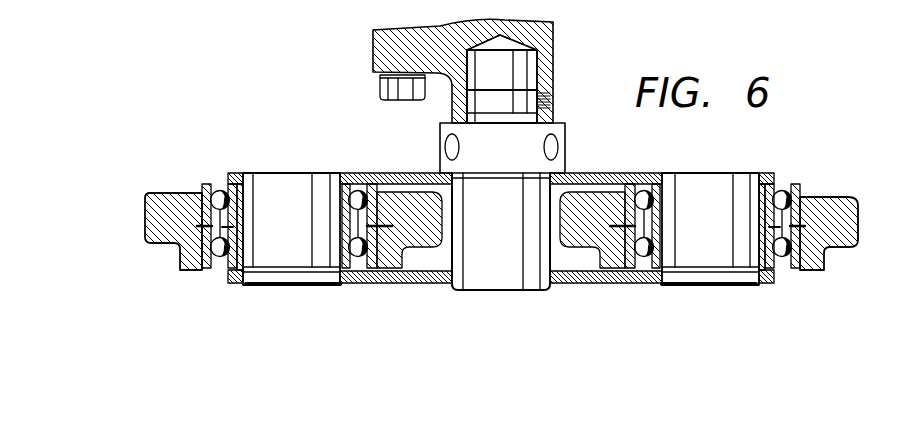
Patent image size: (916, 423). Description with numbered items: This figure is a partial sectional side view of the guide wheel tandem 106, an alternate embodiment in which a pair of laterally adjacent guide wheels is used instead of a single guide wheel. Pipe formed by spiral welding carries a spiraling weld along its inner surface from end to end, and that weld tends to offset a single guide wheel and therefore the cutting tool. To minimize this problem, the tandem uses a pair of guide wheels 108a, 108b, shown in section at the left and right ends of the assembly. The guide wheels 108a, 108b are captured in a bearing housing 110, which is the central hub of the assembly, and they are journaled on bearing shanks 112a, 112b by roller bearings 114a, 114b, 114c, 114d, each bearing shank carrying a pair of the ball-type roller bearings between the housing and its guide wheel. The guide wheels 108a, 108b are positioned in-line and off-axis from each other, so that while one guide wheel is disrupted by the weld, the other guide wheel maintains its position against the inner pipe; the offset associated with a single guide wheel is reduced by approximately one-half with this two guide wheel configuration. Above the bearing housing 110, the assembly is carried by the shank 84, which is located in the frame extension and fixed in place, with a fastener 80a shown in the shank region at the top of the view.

The guide wheel tandem 106 is at (261, 94).
The bearing housing 110 is at (358, 173).
The shank 84 is at (358, 63).
The pivot bolt 80a is at (307, 61).
The guide wheel 108a is at (857, 197).
The guide wheel 108b is at (145, 222).
The bearing shank 112a is at (707, 287).
The bearing shank 112b is at (287, 286).
The roller bearing 114a is at (653, 175).
The roller bearing 114b is at (210, 183).
The roller bearing 114c is at (792, 272).
The roller bearing 114d is at (210, 272).